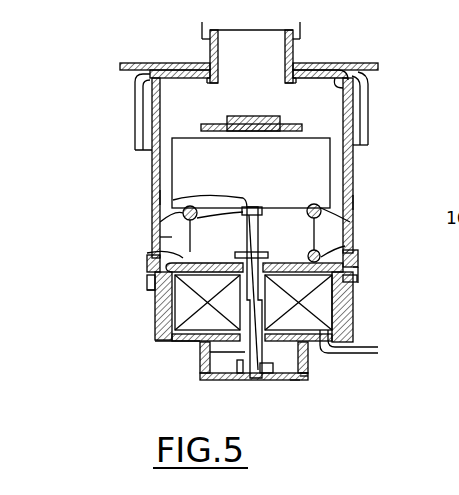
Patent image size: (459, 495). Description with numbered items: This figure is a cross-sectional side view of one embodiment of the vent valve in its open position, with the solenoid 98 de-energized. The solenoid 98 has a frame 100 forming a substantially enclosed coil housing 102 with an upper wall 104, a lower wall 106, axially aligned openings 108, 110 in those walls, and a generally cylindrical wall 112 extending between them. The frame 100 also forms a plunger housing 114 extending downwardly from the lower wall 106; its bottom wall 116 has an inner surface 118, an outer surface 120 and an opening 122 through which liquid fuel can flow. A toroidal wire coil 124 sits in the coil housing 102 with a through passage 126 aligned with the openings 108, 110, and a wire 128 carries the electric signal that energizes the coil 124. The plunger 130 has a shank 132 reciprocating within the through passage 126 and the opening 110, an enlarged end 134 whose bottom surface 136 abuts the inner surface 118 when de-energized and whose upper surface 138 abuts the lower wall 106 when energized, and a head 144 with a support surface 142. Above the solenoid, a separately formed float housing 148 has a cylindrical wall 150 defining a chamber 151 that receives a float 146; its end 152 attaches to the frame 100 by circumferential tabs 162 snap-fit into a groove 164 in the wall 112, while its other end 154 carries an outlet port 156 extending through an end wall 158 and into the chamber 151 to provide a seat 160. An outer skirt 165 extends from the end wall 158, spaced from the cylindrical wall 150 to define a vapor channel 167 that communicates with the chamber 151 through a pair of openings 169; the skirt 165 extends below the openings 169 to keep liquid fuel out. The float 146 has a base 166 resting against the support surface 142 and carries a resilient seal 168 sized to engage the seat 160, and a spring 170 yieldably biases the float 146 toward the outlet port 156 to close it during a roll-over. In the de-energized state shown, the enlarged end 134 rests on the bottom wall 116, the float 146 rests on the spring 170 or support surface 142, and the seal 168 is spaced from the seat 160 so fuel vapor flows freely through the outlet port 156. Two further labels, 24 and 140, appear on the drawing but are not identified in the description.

The spring member 24 is at (150, 228).
The solenoid 98 is at (146, 326).
The frame 100 is at (363, 320).
The coil housing 102 is at (155, 303).
The upper wall 104 is at (350, 254).
The lower wall 106 is at (176, 341).
The opening 108 is at (357, 282).
The opening 110 is at (300, 360).
The cylindrical wall 112 is at (157, 318).
The plunger housing 114 is at (200, 378).
The bottom wall 116 is at (302, 377).
The inner surface 118 is at (304, 373).
The outer surface 120 is at (297, 383).
The opening 122 is at (272, 373).
The wire coil 124 is at (300, 307).
The through passage 126 is at (147, 265).
The wire 128 is at (365, 352).
The plunger 130 is at (238, 350).
The shank 132 is at (160, 336).
The enlarged end 134 is at (208, 368).
The bottom surface 136 is at (237, 374).
The upper surface 138 is at (240, 364).
The step 140 is at (354, 284).
The support surface 142 is at (155, 198).
The head 144 is at (183, 220).
The float 146 is at (172, 178).
The float housing 148 is at (363, 203).
The cylindrical wall 150 is at (350, 190).
The chamber 151 is at (158, 160).
The end 152 is at (147, 292).
The end 154 is at (303, 62).
The outlet port 156 is at (210, 52).
The end wall 158 is at (357, 77).
The seat 160 is at (287, 84).
The tabs 162 is at (147, 285).
The groove 164 is at (355, 281).
The skirt 165 is at (368, 96).
The base 166 is at (348, 219).
The vapor channel 167 is at (357, 148).
The seal 168 is at (150, 127).
The openings 169 is at (136, 93).
The spring 170 is at (147, 237).